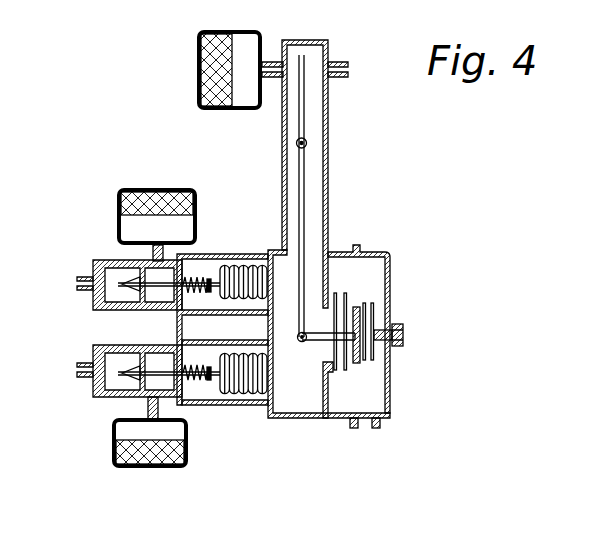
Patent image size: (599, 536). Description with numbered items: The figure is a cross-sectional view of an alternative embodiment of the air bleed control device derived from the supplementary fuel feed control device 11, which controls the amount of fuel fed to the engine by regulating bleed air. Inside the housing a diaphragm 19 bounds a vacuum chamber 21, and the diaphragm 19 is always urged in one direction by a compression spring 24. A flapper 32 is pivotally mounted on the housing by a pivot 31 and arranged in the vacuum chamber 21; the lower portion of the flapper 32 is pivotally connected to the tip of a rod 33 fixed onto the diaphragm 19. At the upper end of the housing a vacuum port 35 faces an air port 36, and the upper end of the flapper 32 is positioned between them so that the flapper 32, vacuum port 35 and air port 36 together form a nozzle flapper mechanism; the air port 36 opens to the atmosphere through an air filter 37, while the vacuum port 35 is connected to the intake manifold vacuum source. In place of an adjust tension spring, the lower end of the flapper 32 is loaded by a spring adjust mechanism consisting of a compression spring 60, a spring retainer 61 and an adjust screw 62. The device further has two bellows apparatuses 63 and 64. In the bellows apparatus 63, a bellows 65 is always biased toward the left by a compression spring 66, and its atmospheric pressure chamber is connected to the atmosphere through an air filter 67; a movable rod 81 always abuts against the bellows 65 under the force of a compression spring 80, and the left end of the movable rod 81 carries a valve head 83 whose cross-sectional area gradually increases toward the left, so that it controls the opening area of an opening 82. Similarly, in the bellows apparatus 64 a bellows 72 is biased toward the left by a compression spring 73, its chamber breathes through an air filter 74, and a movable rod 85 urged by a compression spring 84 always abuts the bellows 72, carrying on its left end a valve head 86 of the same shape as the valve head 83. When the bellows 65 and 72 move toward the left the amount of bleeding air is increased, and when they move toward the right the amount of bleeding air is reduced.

The supplementary fuel feed control device 11 is at (334, 242).
The diaphragm 19 is at (343, 290).
The vacuum chamber 21 is at (302, 389).
The compression spring 24 is at (333, 372).
The pivot 31 is at (308, 143).
The flapper 32 is at (326, 104).
The rod 33 is at (380, 412).
The vacuum port 35 is at (331, 68).
The air port 36 is at (290, 62).
The air filter 37 is at (200, 62).
The compression spring 60 is at (357, 362).
The spring retainer 61 is at (374, 313).
The adjust screw 62 is at (401, 344).
The bellows apparatus 63 is at (97, 262).
The bellows apparatus 64 is at (95, 398).
The bellows 65 is at (215, 275).
The compression spring 66 is at (235, 262).
The air filter 67 is at (150, 190).
The bellows 72 is at (226, 402).
The compression spring 73 is at (245, 402).
The air filter 74 is at (146, 462).
The compression spring 80 is at (195, 296).
The movable rod 81 is at (128, 289).
The opening 82 is at (113, 270).
The valve head 83 is at (80, 287).
The compression spring 84 is at (200, 384).
The movable rod 85 is at (130, 380).
The valve head 86 is at (82, 372).